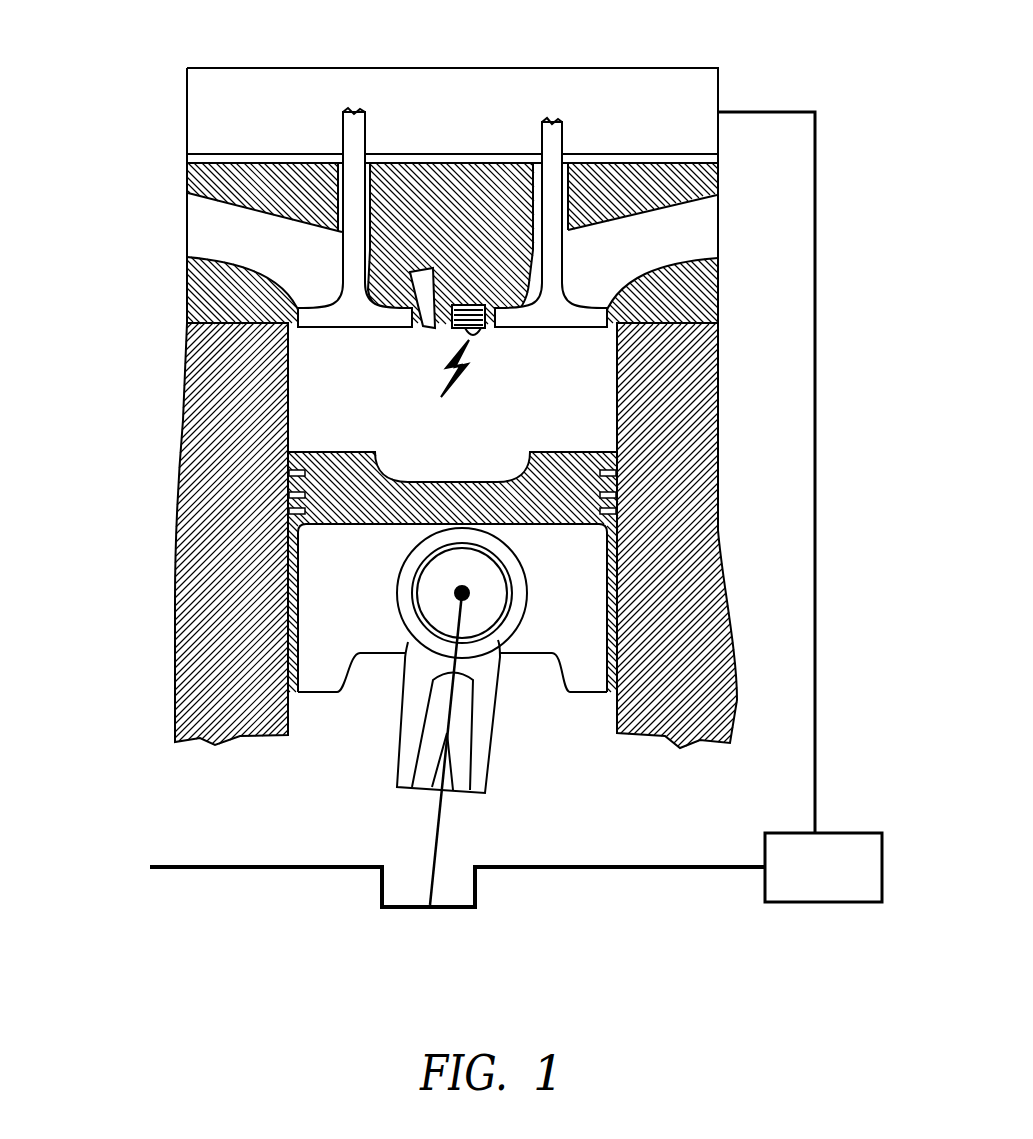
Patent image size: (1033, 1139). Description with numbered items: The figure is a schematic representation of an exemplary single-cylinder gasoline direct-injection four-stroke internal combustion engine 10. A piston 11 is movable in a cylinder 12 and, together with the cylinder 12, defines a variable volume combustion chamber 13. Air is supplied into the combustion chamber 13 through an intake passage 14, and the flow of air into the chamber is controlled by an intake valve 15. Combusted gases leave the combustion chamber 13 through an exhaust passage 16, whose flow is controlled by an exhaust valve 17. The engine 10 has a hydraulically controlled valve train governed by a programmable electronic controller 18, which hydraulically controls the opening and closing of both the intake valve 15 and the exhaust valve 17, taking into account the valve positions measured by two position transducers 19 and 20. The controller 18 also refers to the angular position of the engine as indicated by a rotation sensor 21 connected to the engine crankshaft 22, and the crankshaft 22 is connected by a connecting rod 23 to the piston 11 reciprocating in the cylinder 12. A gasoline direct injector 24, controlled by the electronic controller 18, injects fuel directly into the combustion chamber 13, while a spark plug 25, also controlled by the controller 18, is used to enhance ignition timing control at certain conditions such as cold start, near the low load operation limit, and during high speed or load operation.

The internal combustion engine 10 is at (163, 88).
The piston 11 is at (337, 452).
The cylinder 12 is at (617, 420).
The combustion chamber 13 is at (471, 460).
The intake passage 14 is at (278, 213).
The intake valve 15 is at (352, 317).
The exhaust passage 16 is at (636, 206).
The exhaust valve 17 is at (557, 317).
The electronic controller 18 is at (471, 128).
The position transducer 19 is at (340, 197).
The position transducer 20 is at (565, 197).
The rotation sensor 21 is at (845, 843).
The engine crankshaft 22 is at (512, 870).
The connecting rod 23 is at (435, 821).
The gasoline direct injector 24 is at (418, 327).
The spark plug 25 is at (471, 342).